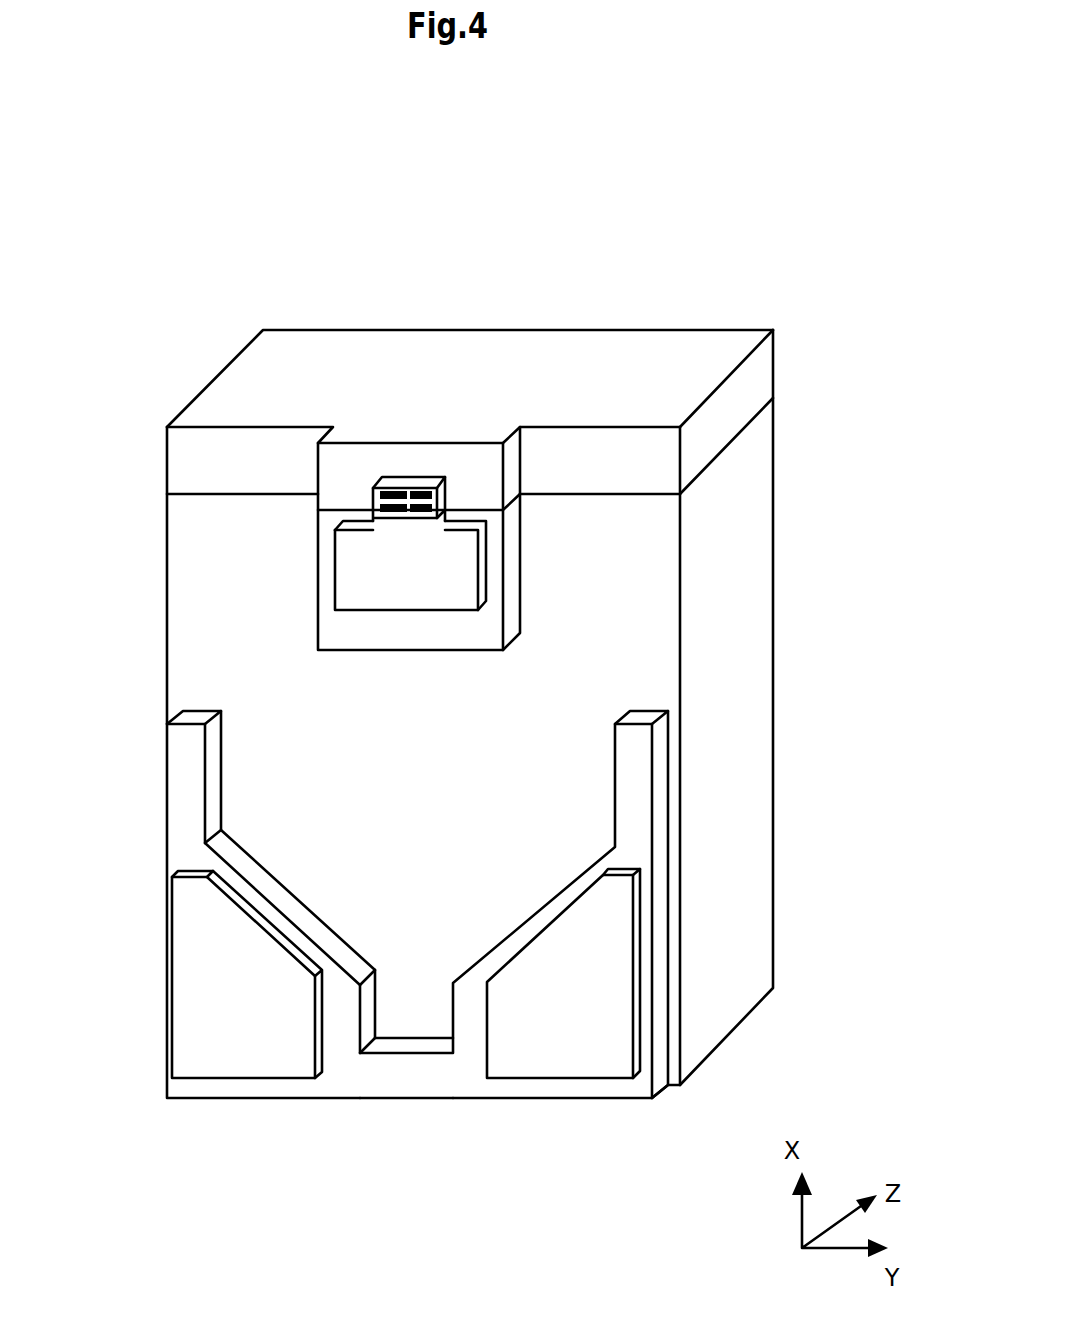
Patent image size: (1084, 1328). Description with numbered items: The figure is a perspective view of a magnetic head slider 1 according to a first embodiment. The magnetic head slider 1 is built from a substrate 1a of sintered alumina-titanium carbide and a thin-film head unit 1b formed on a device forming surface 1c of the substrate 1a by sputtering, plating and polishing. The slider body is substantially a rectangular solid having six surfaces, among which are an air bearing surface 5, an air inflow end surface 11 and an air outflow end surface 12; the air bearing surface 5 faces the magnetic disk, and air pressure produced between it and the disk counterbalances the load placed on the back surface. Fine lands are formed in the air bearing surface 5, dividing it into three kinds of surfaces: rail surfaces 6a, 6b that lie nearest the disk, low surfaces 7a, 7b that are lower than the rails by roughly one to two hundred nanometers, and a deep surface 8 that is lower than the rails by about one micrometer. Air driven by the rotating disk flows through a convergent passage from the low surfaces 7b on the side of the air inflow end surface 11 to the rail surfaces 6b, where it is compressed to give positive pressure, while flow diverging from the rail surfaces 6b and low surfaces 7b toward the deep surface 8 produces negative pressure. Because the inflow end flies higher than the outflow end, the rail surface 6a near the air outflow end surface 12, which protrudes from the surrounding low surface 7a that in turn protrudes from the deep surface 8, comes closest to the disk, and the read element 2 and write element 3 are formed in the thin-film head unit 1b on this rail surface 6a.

The magnetic head slider 1 is at (522, 650).
The substrate 1a is at (748, 483).
The thin-film head unit 1b is at (738, 407).
The device forming surface 1c is at (755, 418).
The read element 2 is at (412, 500).
The write element 3 is at (405, 493).
The air bearing surface 5 is at (225, 209).
The rail surface 6a is at (367, 576).
The rail surfaces 6b is at (243, 1032).
The low surface 7a is at (340, 630).
The low surfaces 7b is at (282, 1088).
The deep surface 8 is at (212, 670).
The air inflow end surface 11 is at (363, 1098).
The air outflow end surface 12 is at (578, 385).